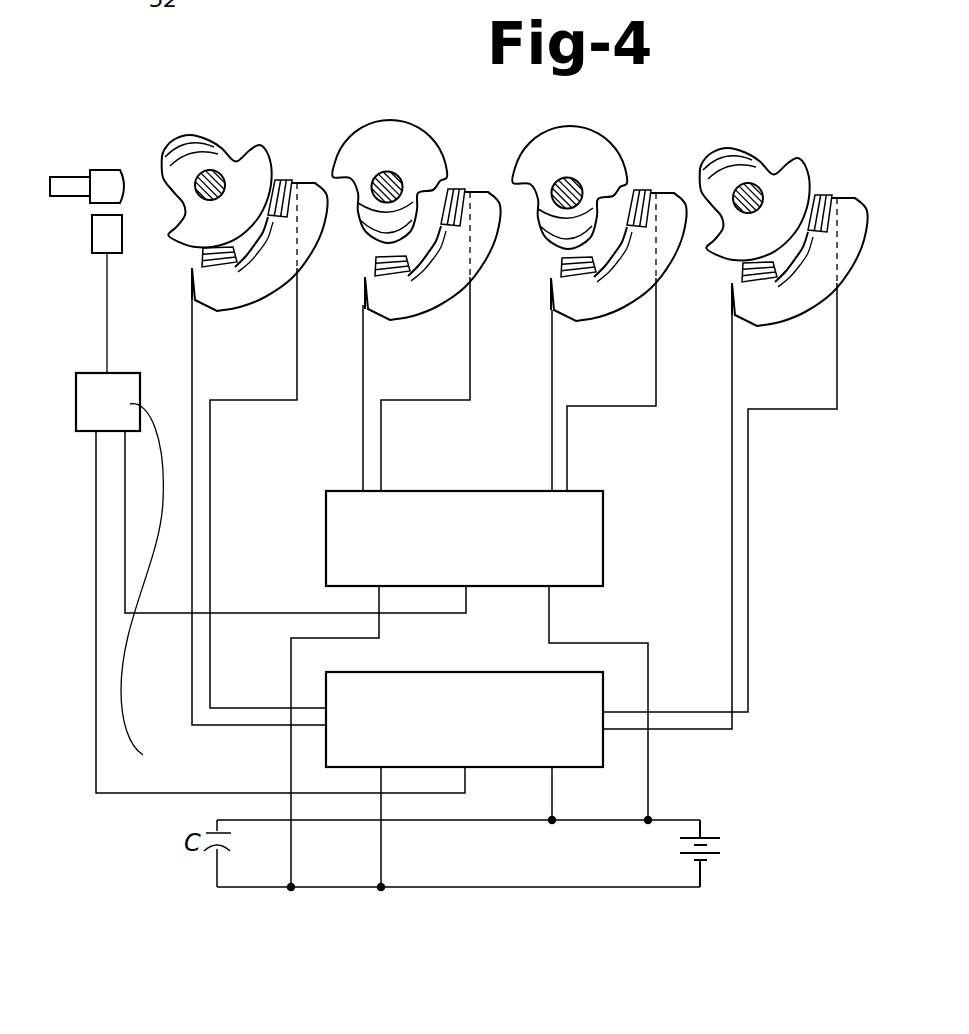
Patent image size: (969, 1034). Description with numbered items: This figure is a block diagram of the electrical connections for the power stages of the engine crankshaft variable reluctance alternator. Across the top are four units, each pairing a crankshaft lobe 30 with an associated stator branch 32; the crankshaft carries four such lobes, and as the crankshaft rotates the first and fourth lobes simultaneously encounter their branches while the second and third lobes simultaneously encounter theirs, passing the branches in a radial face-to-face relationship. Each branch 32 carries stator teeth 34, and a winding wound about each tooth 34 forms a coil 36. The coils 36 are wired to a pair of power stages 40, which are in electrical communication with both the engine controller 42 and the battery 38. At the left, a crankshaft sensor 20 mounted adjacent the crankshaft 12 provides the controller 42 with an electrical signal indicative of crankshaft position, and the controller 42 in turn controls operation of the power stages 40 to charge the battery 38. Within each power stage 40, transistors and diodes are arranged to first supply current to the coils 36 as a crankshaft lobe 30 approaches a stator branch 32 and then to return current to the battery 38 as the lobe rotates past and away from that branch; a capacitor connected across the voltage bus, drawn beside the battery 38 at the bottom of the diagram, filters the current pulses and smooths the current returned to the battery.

The crankshaft 12 is at (106, 175).
The crankshaft sensor 20 is at (107, 236).
The engine controller 42 is at (77, 405).
The crankshaft lobe 30 is at (808, 176).
The stator branch 32 is at (228, 316).
The stator tooth 34 is at (212, 284).
The coil 36 is at (287, 182).
The power stage 40 is at (326, 540).
The battery 38 is at (733, 831).